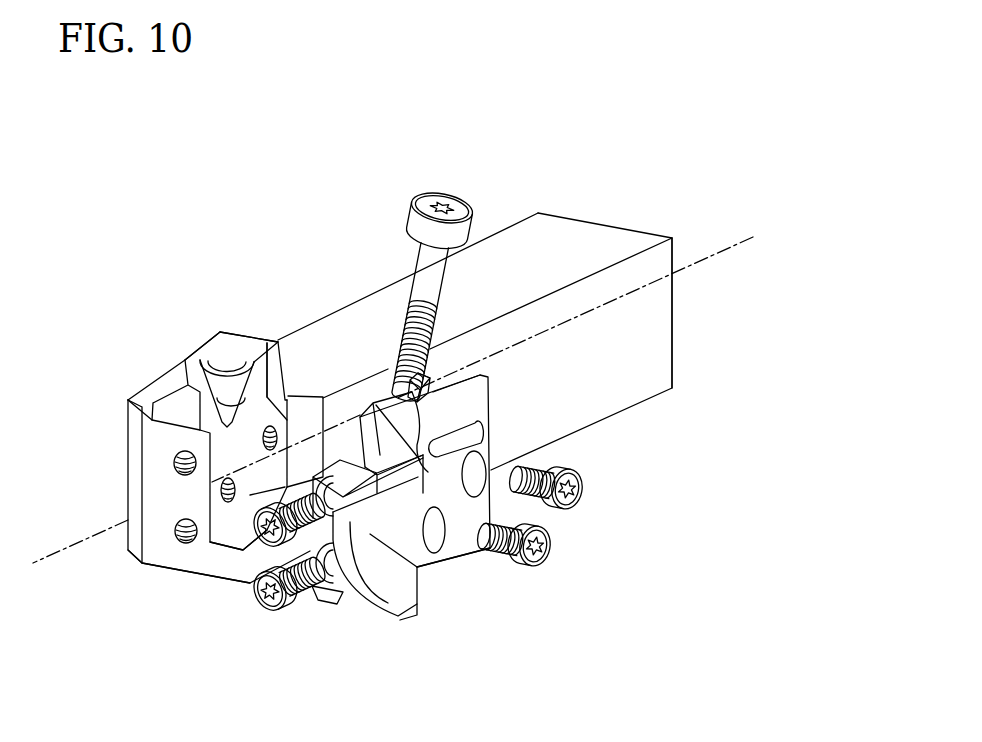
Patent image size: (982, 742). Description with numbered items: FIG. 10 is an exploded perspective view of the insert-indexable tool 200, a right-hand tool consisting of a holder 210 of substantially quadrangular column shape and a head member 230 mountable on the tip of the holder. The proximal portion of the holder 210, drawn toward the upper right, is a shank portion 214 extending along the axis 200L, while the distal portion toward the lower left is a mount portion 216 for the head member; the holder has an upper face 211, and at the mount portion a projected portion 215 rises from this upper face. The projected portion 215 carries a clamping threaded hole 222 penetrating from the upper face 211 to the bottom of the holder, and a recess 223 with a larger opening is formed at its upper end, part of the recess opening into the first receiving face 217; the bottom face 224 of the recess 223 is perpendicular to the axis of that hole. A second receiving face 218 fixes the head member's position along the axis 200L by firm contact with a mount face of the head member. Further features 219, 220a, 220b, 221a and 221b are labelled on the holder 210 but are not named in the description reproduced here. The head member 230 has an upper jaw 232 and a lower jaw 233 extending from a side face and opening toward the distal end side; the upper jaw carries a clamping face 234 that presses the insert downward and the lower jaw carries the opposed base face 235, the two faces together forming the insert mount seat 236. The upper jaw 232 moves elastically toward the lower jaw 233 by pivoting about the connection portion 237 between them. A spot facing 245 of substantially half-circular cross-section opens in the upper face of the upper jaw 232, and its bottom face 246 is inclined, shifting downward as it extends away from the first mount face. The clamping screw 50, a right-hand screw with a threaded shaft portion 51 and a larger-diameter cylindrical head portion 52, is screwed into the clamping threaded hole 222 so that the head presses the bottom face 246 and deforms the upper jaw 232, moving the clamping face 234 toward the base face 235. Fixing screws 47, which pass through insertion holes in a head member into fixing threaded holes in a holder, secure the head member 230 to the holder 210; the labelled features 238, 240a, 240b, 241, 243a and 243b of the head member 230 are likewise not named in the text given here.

The insert-indexable tool 200 is at (212, 205).
The axis 200L is at (740, 237).
The holder 210 is at (475, 293).
The upper face 211 is at (582, 245).
The shank portion 214 is at (520, 195).
The mount portion 216 is at (191, 437).
The projected portion 215 is at (215, 330).
The bottom face of the recess 224 is at (210, 342).
The recess 223 is at (240, 345).
The clamping threaded hole 222 is at (267, 397).
The first receiving face 217 is at (265, 400).
The second through hole 220b is at (277, 440).
The first through hole 220a is at (228, 492).
The first screw hole 221a is at (174, 464).
The second screw hole 221b is at (175, 534).
The second receiving face 218 is at (163, 560).
The stepped surface of first clamp member 219 is at (242, 520).
The clamping screw 50 is at (433, 252).
The shaft portion 51 is at (445, 290).
The head portion 52 is at (425, 190).
The spot facing 245 is at (486, 346).
The bottom face of the spot facing 246 is at (431, 380).
The head member 230 is at (468, 485).
The upper jaw 232 is at (372, 403).
The lower jaw 233 is at (402, 603).
The clamping face 234 is at (413, 440).
The base face 235 is at (388, 497).
The insert mount seat 236 is at (497, 438).
The connection portion 237 is at (500, 420).
The lower surface of side plate 238 is at (460, 556).
The first mounting hole 240a is at (436, 533).
The second mounting hole 240b is at (486, 468).
The contact surface of second clamp member 241 is at (318, 600).
The upper fastening hole 243a is at (324, 476).
The lower fastening hole 243b is at (325, 588).
The fixing screws 47 is at (583, 490).